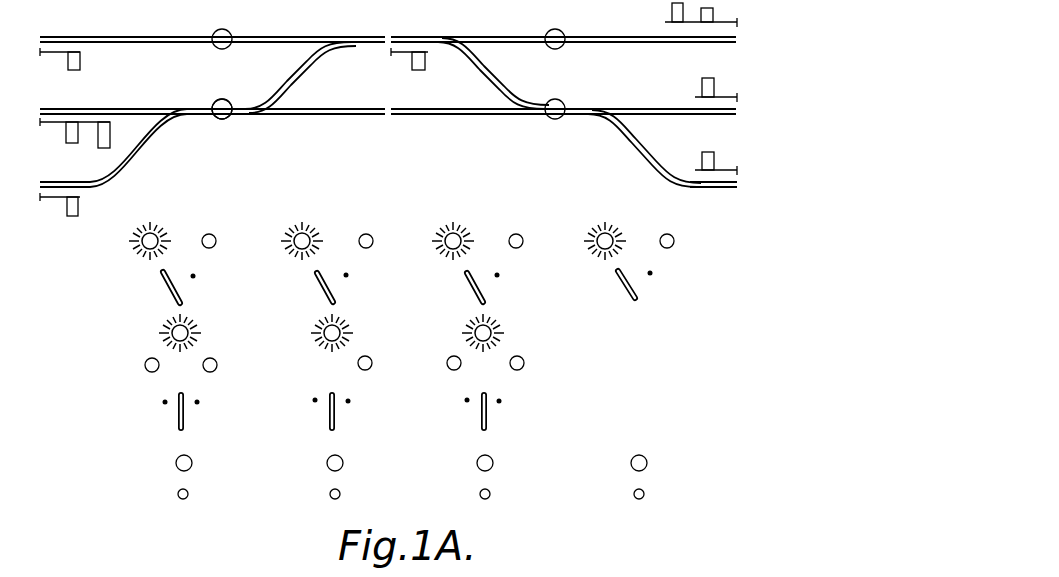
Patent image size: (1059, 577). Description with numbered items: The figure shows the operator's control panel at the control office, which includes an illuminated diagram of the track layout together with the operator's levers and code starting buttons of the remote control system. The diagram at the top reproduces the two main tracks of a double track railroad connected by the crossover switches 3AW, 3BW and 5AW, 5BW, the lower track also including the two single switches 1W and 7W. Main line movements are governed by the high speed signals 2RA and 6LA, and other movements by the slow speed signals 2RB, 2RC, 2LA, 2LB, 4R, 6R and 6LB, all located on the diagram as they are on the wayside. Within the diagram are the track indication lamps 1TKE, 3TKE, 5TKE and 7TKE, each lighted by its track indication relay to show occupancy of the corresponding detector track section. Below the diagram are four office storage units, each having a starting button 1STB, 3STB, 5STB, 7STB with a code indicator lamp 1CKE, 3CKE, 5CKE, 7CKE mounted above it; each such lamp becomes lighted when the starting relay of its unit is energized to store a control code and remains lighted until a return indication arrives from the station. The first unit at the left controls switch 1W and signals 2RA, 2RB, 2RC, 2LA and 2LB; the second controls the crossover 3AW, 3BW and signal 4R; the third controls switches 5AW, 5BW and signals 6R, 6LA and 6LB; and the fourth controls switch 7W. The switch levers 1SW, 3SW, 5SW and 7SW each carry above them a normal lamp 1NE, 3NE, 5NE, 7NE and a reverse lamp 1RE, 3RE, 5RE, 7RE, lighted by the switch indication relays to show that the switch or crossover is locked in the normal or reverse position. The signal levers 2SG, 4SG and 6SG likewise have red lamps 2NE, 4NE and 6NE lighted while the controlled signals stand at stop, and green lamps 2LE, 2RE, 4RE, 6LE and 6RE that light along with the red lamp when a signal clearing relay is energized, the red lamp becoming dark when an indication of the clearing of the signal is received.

The track indication lamp 3TKE is at (228, 24).
The track indication lamp 1TKE is at (220, 118).
The track indication lamp 5TKE is at (560, 23).
The track indication lamp 7TKE is at (556, 119).
The single switch 1W is at (204, 100).
The single switch 7W is at (644, 134).
The crossover switch 3AW is at (343, 24).
The crossover switch 5AW is at (430, 24).
The crossover switch 3BW is at (298, 92).
The crossover switch 5BW is at (493, 89).
The slow speed signal 4R is at (68, 65).
The slow speed signal 6R is at (414, 70).
The high speed signal 2RA is at (98, 148).
The slow speed signal 2RB is at (66, 139).
The slow speed signal 2RC is at (67, 212).
The high speed signal 6LA is at (672, 12).
The slow speed signal 6LB is at (708, 15).
The slow speed signal 2LA is at (708, 88).
The slow speed signal 2LB is at (708, 160).
The normal switch indication lamp 1NE is at (150, 229).
The normal switch indication lamp 3NE is at (300, 229).
The normal switch indication lamp 5NE is at (455, 229).
The normal switch indication lamp 7NE is at (607, 228).
The red signal indication lamp 2NE is at (165, 333).
The red signal indication lamp 4NE is at (318, 333).
The red signal indication lamp 6NE is at (470, 333).
The reverse switch indication lamp 1RE is at (213, 226).
The reverse switch indication lamp 3RE is at (371, 226).
The reverse switch indication lamp 5RE is at (524, 226).
The reverse switch indication lamp 7RE is at (671, 226).
The green signal indication lamp 2RE is at (217, 365).
The green signal indication lamp 4RE is at (372, 367).
The green signal indication lamp 6RE is at (532, 357).
The green signal indication lamp 2LE is at (144, 365).
The green signal indication lamp 6LE is at (449, 360).
The switch lever 1SW is at (190, 275).
The switch lever 3SW is at (344, 275).
The switch lever 5SW is at (495, 275).
The switch lever 7SW is at (645, 272).
The signal lever 2SG is at (180, 400).
The signal lever 4SG is at (327, 399).
The signal lever 6SG is at (482, 400).
The code indicator lamp 1CKE is at (199, 459).
The code indicator lamp 3CKE is at (350, 459).
The code indicator lamp 5CKE is at (500, 459).
The code indicator lamp 7CKE is at (654, 457).
The starting button 1STB is at (196, 491).
The starting button 3STB is at (347, 491).
The starting button 5STB is at (497, 491).
The starting button 7STB is at (652, 490).